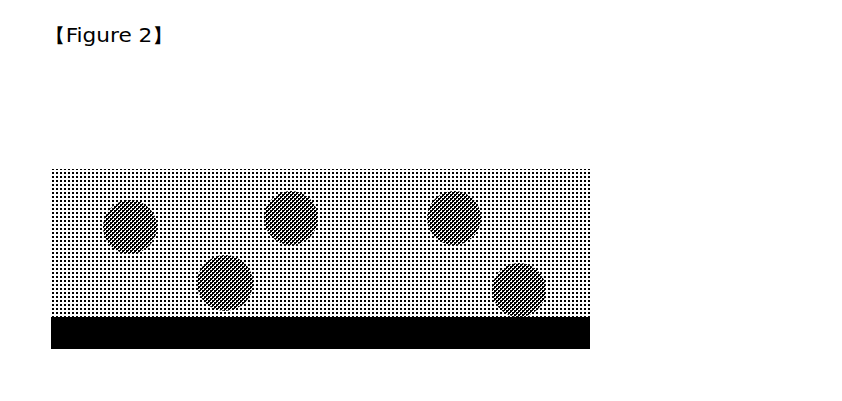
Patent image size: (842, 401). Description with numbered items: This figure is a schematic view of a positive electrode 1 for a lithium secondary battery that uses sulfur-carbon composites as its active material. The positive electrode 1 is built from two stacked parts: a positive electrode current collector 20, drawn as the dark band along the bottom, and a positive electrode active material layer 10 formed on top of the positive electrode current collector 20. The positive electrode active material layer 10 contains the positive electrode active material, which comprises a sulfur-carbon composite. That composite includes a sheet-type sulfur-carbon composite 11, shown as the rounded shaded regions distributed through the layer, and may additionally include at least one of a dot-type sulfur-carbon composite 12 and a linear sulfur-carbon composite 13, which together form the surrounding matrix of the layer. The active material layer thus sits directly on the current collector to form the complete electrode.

The positive electrode 1 is at (429, 220).
The positive electrode active material layer 10 is at (429, 203).
The sheet-type sulfur-carbon composite 11 is at (458, 212).
The dot-type sulfur-carbon composite 12 is at (429, 237).
The linear sulfur-carbon composite 13 is at (563, 203).
The positive electrode current collector 20 is at (590, 330).